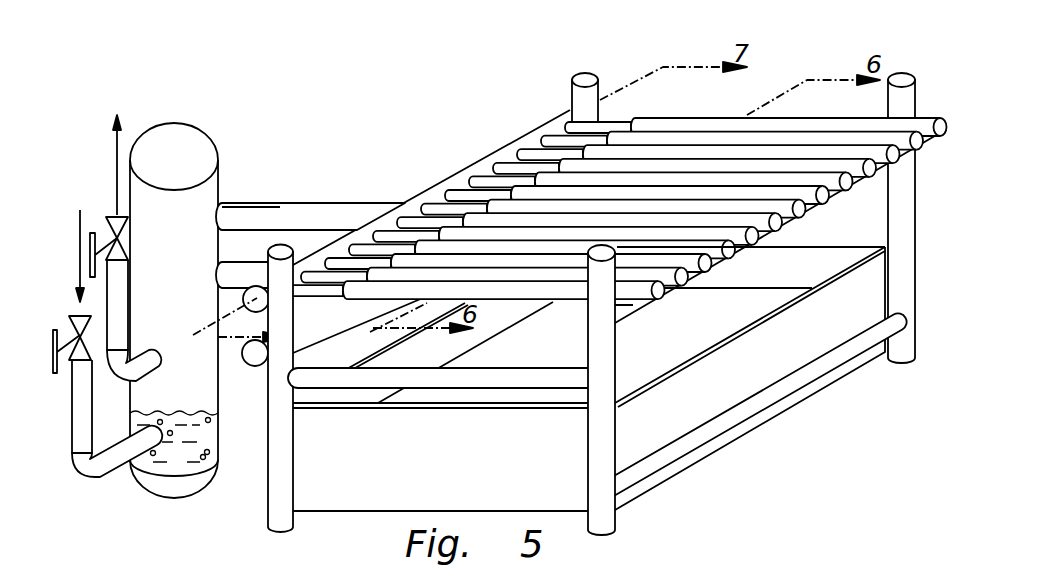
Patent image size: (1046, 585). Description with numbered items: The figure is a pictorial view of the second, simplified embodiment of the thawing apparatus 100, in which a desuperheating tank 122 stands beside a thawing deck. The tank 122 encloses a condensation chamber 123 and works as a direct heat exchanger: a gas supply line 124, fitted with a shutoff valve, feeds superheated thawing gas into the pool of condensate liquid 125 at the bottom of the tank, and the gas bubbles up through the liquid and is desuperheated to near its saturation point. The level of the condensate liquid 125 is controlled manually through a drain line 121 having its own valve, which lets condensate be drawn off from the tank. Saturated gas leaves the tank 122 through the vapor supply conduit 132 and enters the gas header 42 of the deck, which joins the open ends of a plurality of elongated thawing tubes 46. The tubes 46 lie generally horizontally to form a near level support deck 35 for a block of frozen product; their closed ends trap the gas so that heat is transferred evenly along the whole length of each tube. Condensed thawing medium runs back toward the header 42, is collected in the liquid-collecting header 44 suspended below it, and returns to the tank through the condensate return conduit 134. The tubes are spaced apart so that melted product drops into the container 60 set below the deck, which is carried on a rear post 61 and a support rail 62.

The condensate separator assembly 100 is at (229, 295).
The condensation chamber 123 is at (177, 220).
The desuperheating tank 122 is at (221, 190).
The vapor supply conduit 132 is at (267, 203).
The condensate return conduit 134 is at (258, 260).
The drain line 121 is at (113, 380).
The gas supply line 124 is at (85, 470).
The condensate liquid 125 is at (182, 453).
The gas header 42 is at (495, 151).
The thawing tubes 46 is at (710, 117).
The liquid-collecting header 44 is at (317, 380).
The container 60 is at (730, 395).
The rear support post 61 is at (852, 193).
The support rail 62 is at (905, 336).
The heat exchanger 35 is at (756, 573).